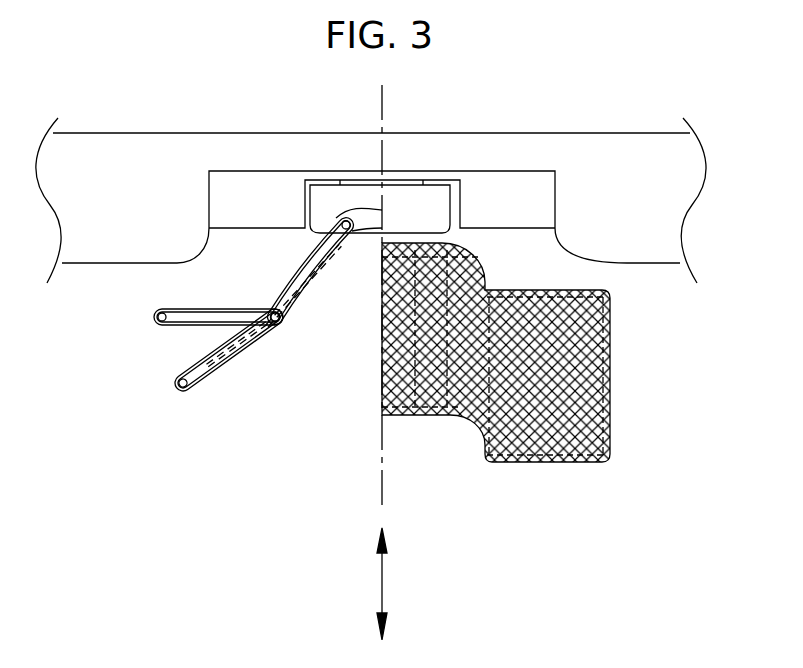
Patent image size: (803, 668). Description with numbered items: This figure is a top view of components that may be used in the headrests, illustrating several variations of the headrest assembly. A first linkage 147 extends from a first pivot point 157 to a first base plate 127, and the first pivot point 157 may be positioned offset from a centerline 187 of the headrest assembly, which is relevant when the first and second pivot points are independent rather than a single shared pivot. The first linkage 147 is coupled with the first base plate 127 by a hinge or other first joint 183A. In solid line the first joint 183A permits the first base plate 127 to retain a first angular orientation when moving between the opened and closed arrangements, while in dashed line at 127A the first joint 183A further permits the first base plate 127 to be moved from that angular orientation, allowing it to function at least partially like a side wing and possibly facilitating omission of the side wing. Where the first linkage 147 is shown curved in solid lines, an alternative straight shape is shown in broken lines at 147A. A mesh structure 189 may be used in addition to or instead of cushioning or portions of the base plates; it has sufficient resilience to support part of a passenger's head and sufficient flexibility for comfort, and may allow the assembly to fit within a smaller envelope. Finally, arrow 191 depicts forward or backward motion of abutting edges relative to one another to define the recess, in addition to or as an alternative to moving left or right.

The first pivot point 157 is at (342, 221).
The first linkage 147 is at (297, 270).
The straight shape of first linkage 147A is at (310, 283).
The first base plate 127 is at (170, 326).
The first base plate moved from first angular orientation 127A is at (204, 381).
The first joint 183A is at (279, 332).
The centerline 187 is at (382, 490).
The mesh structure 189 is at (574, 461).
The arrow 191 is at (382, 582).